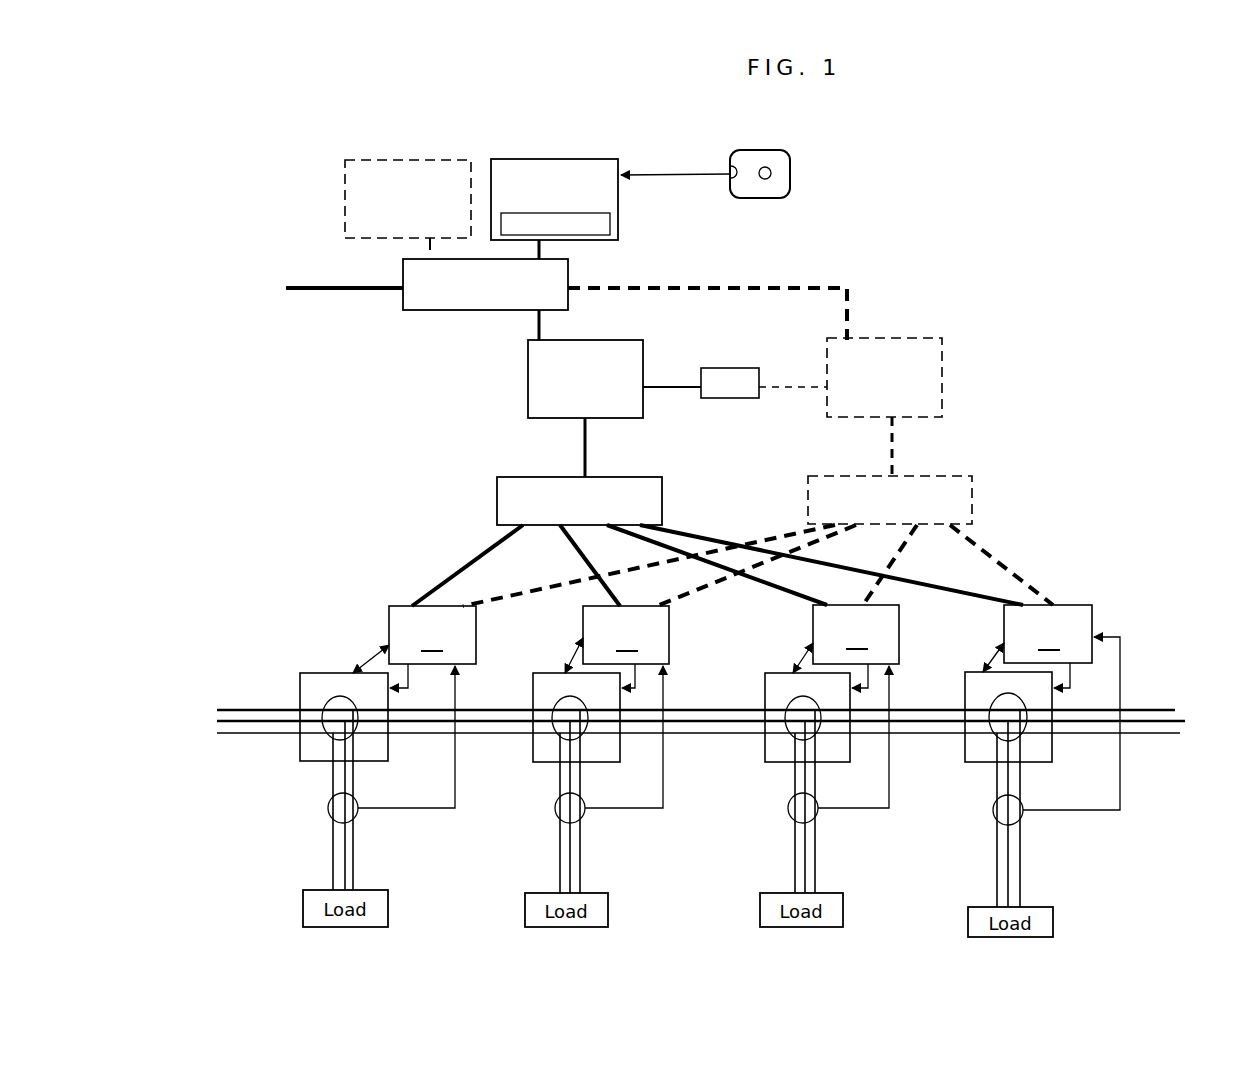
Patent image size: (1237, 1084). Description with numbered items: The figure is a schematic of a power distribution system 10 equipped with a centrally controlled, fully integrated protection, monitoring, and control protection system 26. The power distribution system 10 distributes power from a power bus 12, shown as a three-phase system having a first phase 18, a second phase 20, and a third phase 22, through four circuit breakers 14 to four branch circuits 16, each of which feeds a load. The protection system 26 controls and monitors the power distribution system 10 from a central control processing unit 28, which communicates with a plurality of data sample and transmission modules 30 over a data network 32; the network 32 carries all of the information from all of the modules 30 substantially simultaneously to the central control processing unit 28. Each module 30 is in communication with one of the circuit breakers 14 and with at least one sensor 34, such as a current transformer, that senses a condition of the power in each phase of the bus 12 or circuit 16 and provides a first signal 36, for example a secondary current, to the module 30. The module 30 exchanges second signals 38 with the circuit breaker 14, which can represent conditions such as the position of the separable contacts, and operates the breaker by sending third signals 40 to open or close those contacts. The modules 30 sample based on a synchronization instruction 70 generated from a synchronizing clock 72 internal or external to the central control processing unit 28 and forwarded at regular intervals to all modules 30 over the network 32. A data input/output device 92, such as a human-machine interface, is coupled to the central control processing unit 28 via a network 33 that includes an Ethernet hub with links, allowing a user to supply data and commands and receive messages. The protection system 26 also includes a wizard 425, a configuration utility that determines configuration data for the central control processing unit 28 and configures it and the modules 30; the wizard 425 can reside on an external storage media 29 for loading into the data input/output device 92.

The power distribution system 10 is at (240, 655).
The power bus 12 is at (207, 703).
The circuit breaker 14 is at (300, 690).
The branch circuit 16 is at (332, 783).
The first phase 18 is at (1175, 710).
The second phase 20 is at (1180, 722).
The third phase 22 is at (1183, 733).
The protection system 26 is at (1102, 460).
The central control processing unit 28 is at (528, 387).
The external storage media 29 is at (780, 162).
The data sample and transmission module 30 is at (740, 634).
The data network 32 is at (588, 450).
The network 33 is at (568, 290).
The sensor 34 is at (328, 812).
The first signal 36 is at (407, 810).
The second signal 38 is at (372, 655).
The third signal 40 is at (410, 686).
The synchronization instruction 70 is at (668, 388).
The synchronizing clock 72 is at (735, 400).
The data input/output device 92 is at (440, 160).
The wizard 425 is at (603, 218).